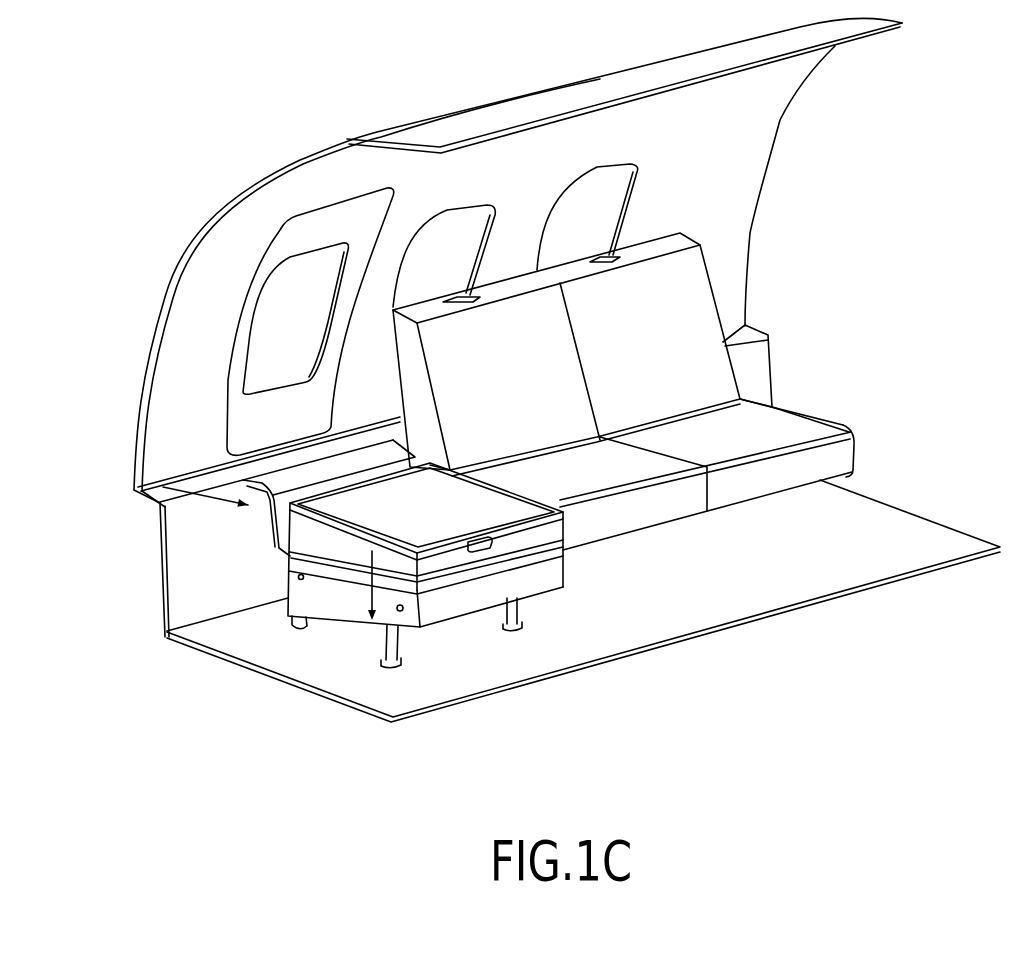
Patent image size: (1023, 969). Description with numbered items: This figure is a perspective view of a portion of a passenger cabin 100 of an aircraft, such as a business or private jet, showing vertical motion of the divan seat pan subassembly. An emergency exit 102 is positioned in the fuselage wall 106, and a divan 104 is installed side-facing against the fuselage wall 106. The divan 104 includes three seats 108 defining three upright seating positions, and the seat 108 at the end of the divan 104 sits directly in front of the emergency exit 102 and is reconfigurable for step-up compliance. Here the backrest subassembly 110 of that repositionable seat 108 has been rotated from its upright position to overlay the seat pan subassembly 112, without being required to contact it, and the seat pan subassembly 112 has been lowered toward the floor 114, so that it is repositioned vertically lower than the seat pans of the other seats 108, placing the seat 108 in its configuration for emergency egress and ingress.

The passenger cabin 100 is at (235, 98).
The emergency exit 102 is at (298, 237).
The divan 104 is at (728, 262).
The fuselage wall 106 is at (180, 314).
The seat 108 is at (138, 487).
The backrest subassembly 110 is at (317, 537).
The seat pan subassembly 112 is at (348, 620).
The floor 114 is at (365, 675).